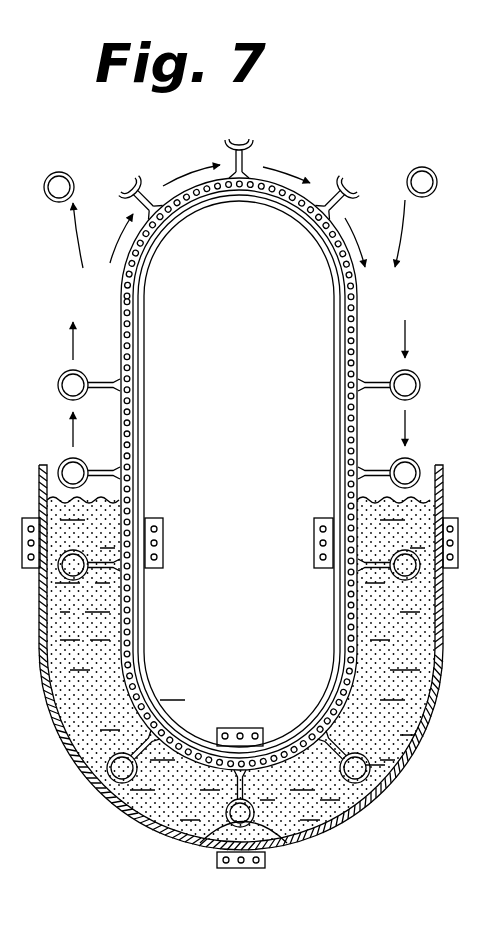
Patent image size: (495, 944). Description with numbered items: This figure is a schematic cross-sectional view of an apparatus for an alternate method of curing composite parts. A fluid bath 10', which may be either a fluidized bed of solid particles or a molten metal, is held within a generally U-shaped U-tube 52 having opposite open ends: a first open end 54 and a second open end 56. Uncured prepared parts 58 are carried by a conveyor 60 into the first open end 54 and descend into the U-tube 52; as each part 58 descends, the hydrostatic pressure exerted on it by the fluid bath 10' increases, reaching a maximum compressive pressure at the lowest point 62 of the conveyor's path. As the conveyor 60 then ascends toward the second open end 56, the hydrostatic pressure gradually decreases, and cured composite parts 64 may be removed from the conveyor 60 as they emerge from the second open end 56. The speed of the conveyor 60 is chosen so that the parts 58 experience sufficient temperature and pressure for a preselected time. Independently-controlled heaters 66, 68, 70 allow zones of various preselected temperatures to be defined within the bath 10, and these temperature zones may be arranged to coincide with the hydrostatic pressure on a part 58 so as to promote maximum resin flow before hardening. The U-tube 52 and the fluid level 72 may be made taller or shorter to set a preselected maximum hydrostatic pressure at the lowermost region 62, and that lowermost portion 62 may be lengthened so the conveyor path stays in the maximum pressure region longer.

The fluid bath 10' is at (271, 669).
The bath 10 is at (271, 669).
The U-tube 52 is at (403, 775).
The first open end 54 is at (436, 462).
The second open end 56 is at (46, 462).
The uncured prepared parts 58 is at (436, 175).
The conveyor 60 is at (315, 197).
The lowest point of the conveyor's path 62 is at (263, 822).
The cured composite parts 64 is at (48, 175).
The heater 66 is at (313, 543).
The heater 68 is at (240, 727).
The heater 70 is at (166, 528).
The fluid level 72 is at (440, 494).